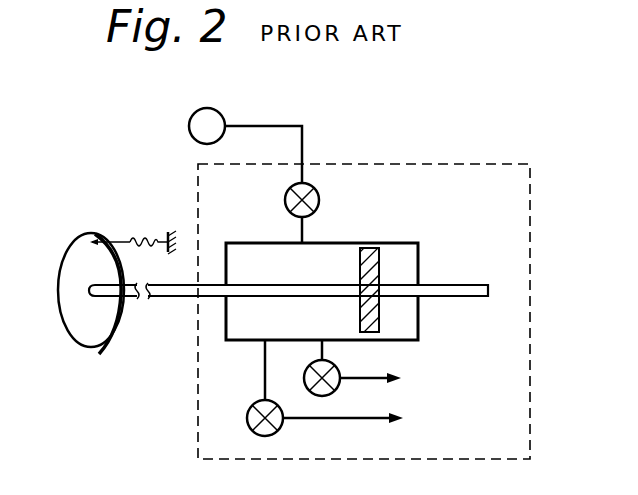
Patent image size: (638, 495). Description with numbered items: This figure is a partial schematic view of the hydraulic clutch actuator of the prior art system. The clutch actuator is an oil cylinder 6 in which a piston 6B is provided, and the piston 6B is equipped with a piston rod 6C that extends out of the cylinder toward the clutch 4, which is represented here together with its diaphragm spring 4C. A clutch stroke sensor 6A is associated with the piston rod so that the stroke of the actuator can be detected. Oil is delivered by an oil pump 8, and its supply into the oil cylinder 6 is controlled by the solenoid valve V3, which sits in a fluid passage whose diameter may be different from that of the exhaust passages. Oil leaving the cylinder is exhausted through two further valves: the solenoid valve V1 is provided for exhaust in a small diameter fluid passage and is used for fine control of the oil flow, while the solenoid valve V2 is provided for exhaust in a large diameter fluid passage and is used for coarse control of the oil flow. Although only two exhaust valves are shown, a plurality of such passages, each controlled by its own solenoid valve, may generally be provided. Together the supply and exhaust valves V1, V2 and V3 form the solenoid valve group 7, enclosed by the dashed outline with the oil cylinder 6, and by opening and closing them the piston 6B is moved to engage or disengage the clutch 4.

The oil pump 8 is at (189, 126).
The solenoid valve V3 is at (321, 200).
The solenoid valve group 7 is at (428, 162).
The clutch actuator 6 is at (378, 244).
The piston 6B is at (379, 263).
The clutch stroke sensor 6A is at (475, 284).
The piston rod 6C is at (151, 297).
The clutch 4 is at (90, 347).
The diaphragm spring 4C is at (132, 238).
The solenoid valve V1 is at (252, 408).
The solenoid valve V2 is at (339, 371).